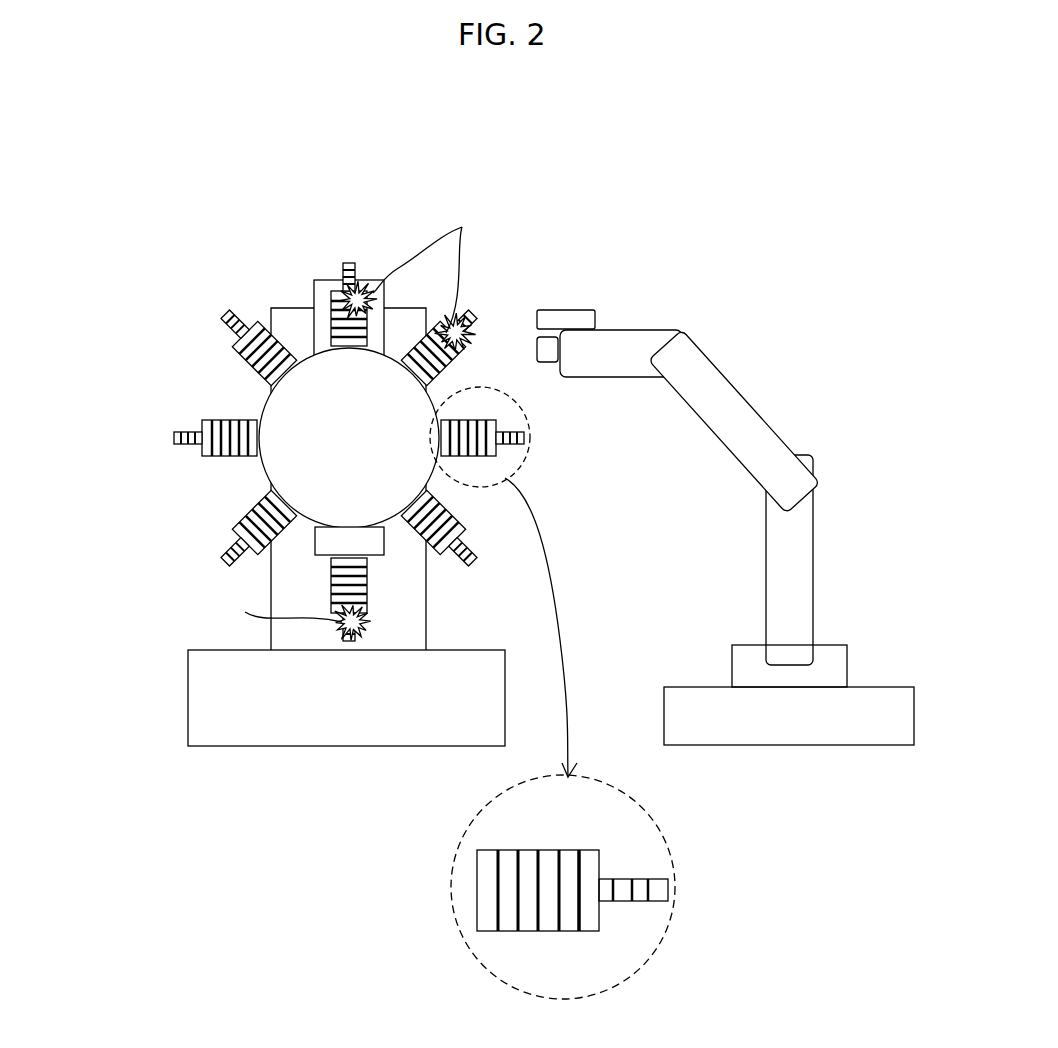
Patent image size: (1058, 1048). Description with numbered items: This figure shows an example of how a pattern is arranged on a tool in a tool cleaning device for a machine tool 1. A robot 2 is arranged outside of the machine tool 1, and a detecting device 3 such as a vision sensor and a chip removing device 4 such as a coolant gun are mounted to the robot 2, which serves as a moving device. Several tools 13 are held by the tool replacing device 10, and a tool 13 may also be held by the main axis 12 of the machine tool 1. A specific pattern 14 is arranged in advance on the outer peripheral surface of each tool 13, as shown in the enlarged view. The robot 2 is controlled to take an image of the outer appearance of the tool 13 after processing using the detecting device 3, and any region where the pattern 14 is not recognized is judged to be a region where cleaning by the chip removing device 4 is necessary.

The machine tool 1 is at (204, 224).
The robot 2 is at (790, 292).
The detecting device 3 is at (597, 310).
The chip removing device 4 is at (553, 363).
The tool replacing device 10 is at (308, 370).
The main axis 12 is at (389, 560).
The tool 13 is at (354, 265).
The pattern 14 is at (580, 913).